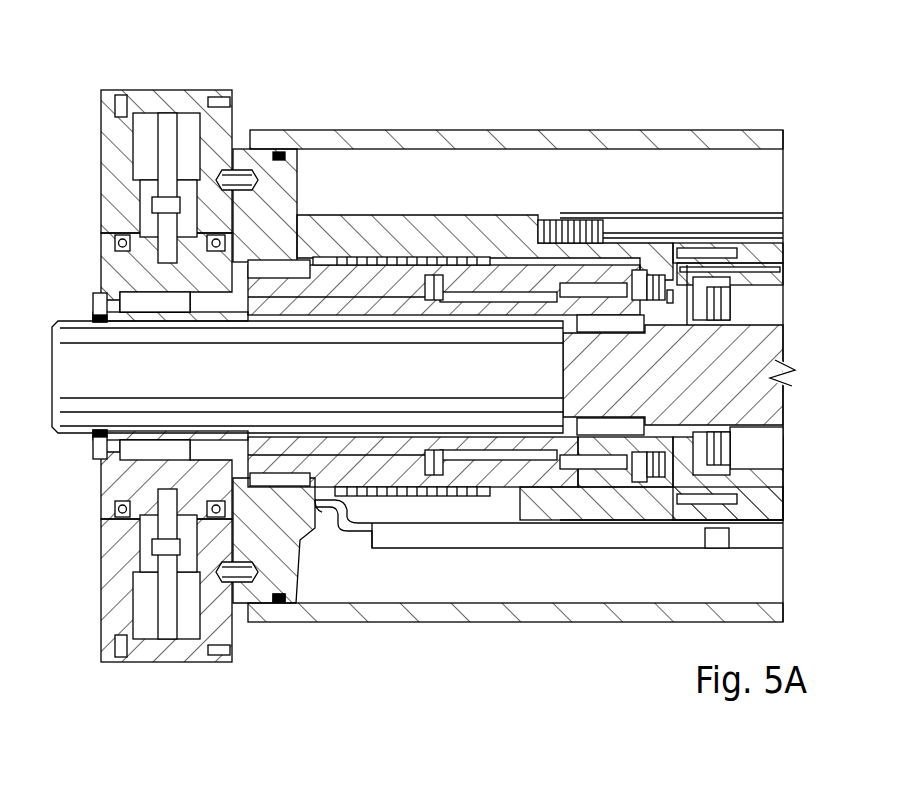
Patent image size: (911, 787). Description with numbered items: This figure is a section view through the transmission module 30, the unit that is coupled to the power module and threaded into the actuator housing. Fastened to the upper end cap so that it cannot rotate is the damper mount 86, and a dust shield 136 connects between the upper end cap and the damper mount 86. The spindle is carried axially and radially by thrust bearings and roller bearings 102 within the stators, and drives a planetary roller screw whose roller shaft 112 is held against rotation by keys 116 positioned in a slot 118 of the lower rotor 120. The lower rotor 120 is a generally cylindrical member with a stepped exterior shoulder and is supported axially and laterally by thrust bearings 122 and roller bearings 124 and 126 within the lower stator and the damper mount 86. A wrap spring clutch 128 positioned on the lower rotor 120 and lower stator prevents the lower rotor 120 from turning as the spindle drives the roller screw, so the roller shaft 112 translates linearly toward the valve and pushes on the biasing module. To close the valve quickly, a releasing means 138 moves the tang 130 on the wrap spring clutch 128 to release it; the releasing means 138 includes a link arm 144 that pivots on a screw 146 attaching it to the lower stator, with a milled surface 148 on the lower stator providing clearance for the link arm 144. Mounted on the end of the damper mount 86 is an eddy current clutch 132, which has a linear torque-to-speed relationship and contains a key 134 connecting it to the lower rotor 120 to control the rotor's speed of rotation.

The transmission module 30 is at (507, 100).
The damper mount 86 is at (380, 215).
The roller bearings 102 is at (748, 515).
The roller shaft 112 is at (468, 377).
The keys 116 is at (628, 520).
The slot 118 is at (280, 320).
The lower rotor 120 is at (410, 530).
The thrust bearings 122 is at (633, 278).
The roller bearings 124 is at (568, 290).
The roller bearings 126 is at (305, 518).
The wrap spring clutch 128 is at (430, 260).
The tang 130 is at (332, 505).
The eddy current clutch 132 is at (168, 90).
The key 134 is at (140, 300).
The dust shield 136 is at (553, 130).
The releasing means 138 is at (625, 425).
The link arm 144 is at (418, 527).
The screw 146 is at (715, 548).
The surface 148 is at (760, 520).